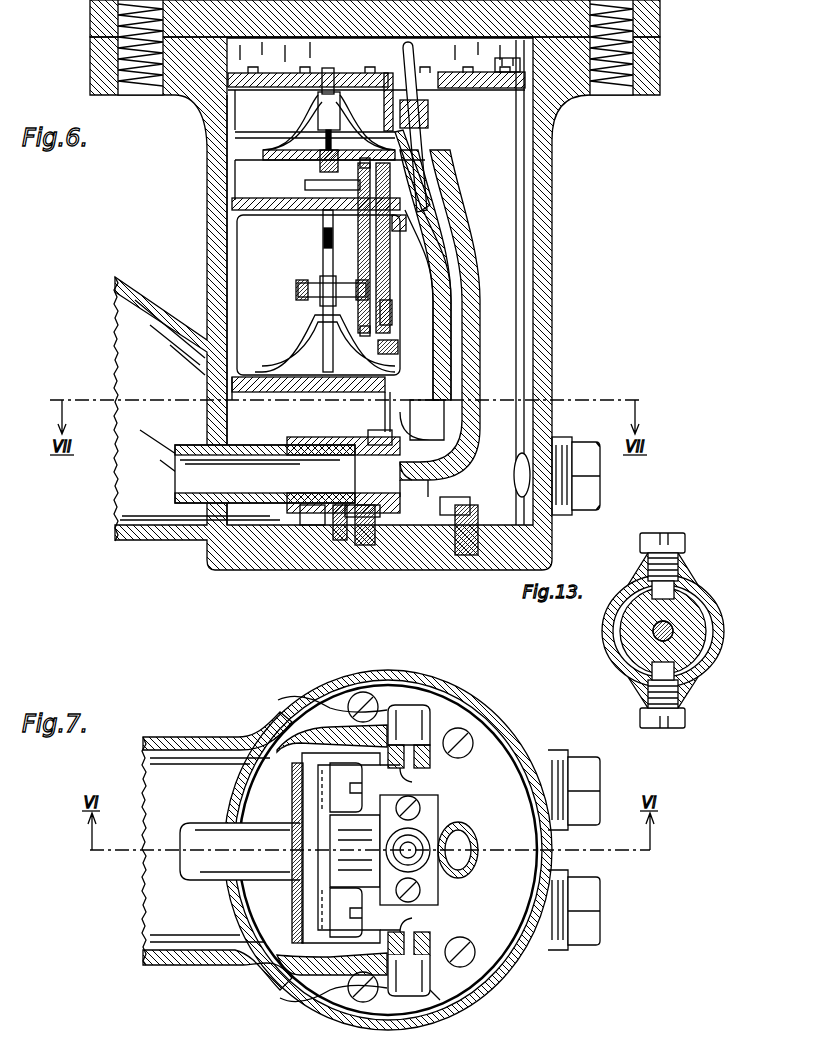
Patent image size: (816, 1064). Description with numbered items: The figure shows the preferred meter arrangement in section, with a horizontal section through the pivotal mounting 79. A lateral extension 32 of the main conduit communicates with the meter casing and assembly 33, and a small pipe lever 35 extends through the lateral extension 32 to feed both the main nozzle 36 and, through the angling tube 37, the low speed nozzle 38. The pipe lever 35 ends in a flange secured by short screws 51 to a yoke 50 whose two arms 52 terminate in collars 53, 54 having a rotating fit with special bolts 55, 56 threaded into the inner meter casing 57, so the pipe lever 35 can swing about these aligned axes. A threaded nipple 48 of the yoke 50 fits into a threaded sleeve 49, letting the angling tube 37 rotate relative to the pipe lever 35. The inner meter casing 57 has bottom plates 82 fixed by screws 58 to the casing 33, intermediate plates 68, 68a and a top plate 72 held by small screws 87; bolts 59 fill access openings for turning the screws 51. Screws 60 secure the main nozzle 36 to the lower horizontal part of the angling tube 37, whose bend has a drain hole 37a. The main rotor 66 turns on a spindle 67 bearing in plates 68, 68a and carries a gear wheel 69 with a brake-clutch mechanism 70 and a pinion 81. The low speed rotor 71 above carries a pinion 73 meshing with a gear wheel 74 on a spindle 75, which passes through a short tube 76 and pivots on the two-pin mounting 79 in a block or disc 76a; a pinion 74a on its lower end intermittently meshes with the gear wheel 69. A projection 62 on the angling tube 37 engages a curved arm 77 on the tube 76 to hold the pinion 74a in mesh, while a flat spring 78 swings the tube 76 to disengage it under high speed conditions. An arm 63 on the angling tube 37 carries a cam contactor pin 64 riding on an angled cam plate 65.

In FIG. 6, the lateral extension 32 is at (140, 318).
In FIG. 7, the lateral extension 32 is at (150, 768).
In FIG. 6, the meter casing and assembly 33 is at (601, 209).
In FIG. 7, the meter casing and assembly 33 is at (395, 658).
In FIG. 6, the pipe lever 35 is at (203, 445).
In FIG. 7, the pipe lever 35 is at (205, 823).
In FIG. 6, the main nozzle 36 is at (378, 432).
In FIG. 7, the main nozzle 36 is at (418, 840).
In FIG. 6, the angling tube 37 is at (468, 300).
In FIG. 7, the angling tube 37 is at (468, 830).
In FIG. 6, the drain hole 37a is at (425, 497).
In FIG. 6, the low speed nozzle 38 is at (413, 185).
In FIG. 6, the nipple 48 is at (340, 540).
In FIG. 7, the nipple 48 is at (330, 826).
In FIG. 6, the threaded sleeve 49 is at (365, 545).
In FIG. 7, the threaded sleeve 49 is at (338, 866).
In FIG. 6, the yoke 50 is at (322, 525).
In FIG. 7, the yoke 50 is at (300, 786).
In FIG. 7, the short screws 51 is at (340, 797).
In FIG. 6, the arms 52 is at (360, 440).
In FIG. 7, the arms 52 is at (370, 760).
In FIG. 6, the collar 53 is at (444, 405).
In FIG. 7, the collar 53 is at (412, 780).
In FIG. 7, the collar 54 is at (412, 920).
In FIG. 7, the special bolt 55 is at (428, 708).
In FIG. 7, the special bolt 56 is at (432, 995).
In FIG. 6, the inner meter casing 57 is at (224, 268).
In FIG. 7, the inner meter casing 57 is at (292, 712).
In FIG. 6, the screws 58 is at (365, 497).
In FIG. 7, the screws 58 is at (358, 700).
In FIG. 6, the bolts 59 is at (602, 470).
In FIG. 7, the bolts 59 is at (602, 765).
In FIG. 7, the screws 60 is at (420, 808).
In FIG. 6, the projection 62 is at (440, 268).
In FIG. 6, the arm 63 is at (430, 162).
In FIG. 6, the cam contactor pin 64 is at (418, 92).
In FIG. 6, the cam plate 65 is at (492, 89).
In FIG. 6, the main rotor 66 is at (250, 365).
In FIG. 6, the spindle 67 is at (323, 262).
In FIG. 6, the intermediate plate 68 is at (254, 394).
In FIG. 6, the intermediate plate 68a is at (268, 211).
In FIG. 6, the gear wheel 69 is at (296, 290).
In FIG. 6, the brake-clutch mechanism 70 is at (320, 296).
In FIG. 6, the low speed rotor 71 is at (256, 153).
In FIG. 6, the top plate 72 is at (285, 74).
In FIG. 6, the pinion 73 is at (318, 172).
In FIG. 6, the gear wheel 74 is at (428, 144).
In FIG. 6, the pinion 74a is at (392, 312).
In FIG. 6, the spindle 75 is at (358, 238).
In FIG. 13, the spindle 75 is at (674, 630).
In FIG. 6, the short tube 76 is at (376, 265).
In FIG. 13, the short tube 76 is at (613, 633).
In FIG. 13, the block or disc 76a is at (700, 648).
In FIG. 6, the curved arm 77 is at (406, 222).
In FIG. 6, the flat spring 78 is at (398, 347).
In FIG. 6, the pivotal mounting 79 is at (366, 158).
In FIG. 13, the pivotal mounting 79 is at (672, 598).
In FIG. 6, the pinion 81 is at (324, 236).
In FIG. 6, the bottom plates 82 is at (467, 555).
In FIG. 7, the bottom plates 82 is at (456, 720).
In FIG. 6, the small screws 87 is at (368, 72).